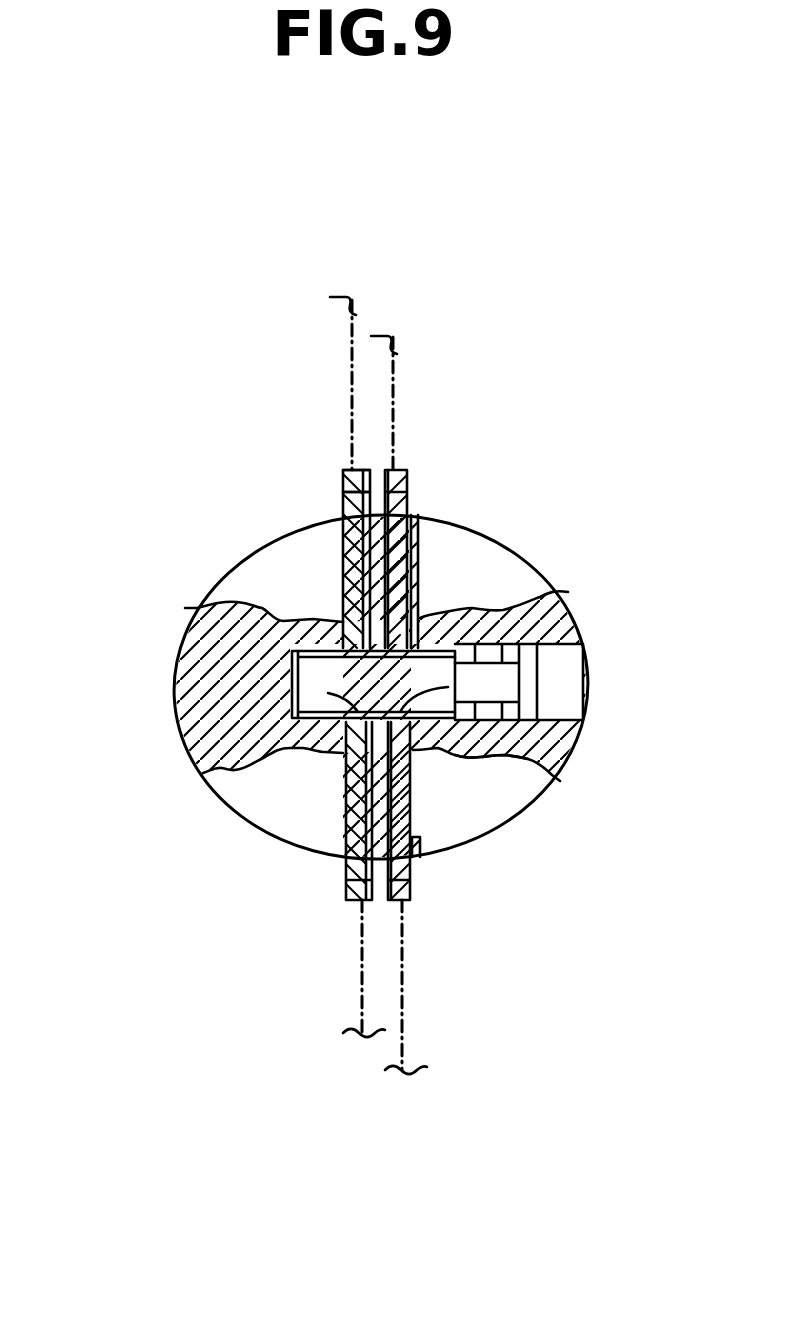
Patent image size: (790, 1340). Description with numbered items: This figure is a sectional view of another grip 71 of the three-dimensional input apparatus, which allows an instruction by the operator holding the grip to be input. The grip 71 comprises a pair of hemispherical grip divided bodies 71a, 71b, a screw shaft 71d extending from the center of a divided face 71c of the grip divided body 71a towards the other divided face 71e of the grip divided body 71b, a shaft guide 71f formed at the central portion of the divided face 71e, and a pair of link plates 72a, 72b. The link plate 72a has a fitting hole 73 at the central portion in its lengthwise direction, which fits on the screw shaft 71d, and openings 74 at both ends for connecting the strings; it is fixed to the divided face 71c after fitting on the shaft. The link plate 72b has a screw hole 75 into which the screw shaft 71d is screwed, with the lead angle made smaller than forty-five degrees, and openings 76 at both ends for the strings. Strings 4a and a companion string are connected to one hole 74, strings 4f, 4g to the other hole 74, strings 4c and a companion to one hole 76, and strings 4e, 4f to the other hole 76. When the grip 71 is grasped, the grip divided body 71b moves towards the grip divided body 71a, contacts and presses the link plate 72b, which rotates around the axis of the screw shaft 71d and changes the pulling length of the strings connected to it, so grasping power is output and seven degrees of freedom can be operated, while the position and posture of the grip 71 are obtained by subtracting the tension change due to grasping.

The string 4a is at (348, 364).
The string 4c is at (393, 395).
The string 4e is at (415, 1032).
The string 4f is at (382, 985).
The string 4g is at (363, 993).
The grip 71 is at (250, 838).
The grip divided body 71a is at (268, 548).
The grip divided body 71b is at (513, 563).
The divided face 71c is at (345, 838).
The screw shaft 71d is at (345, 690).
The divided face 71e is at (420, 838).
The shaft guide 71f is at (475, 758).
The link plate 72a is at (340, 497).
The link plate 72b is at (407, 500).
The fitting hole 73 is at (292, 697).
The opening 74 is at (343, 488).
The screw hole 75 is at (455, 685).
The opening 76 is at (403, 470).